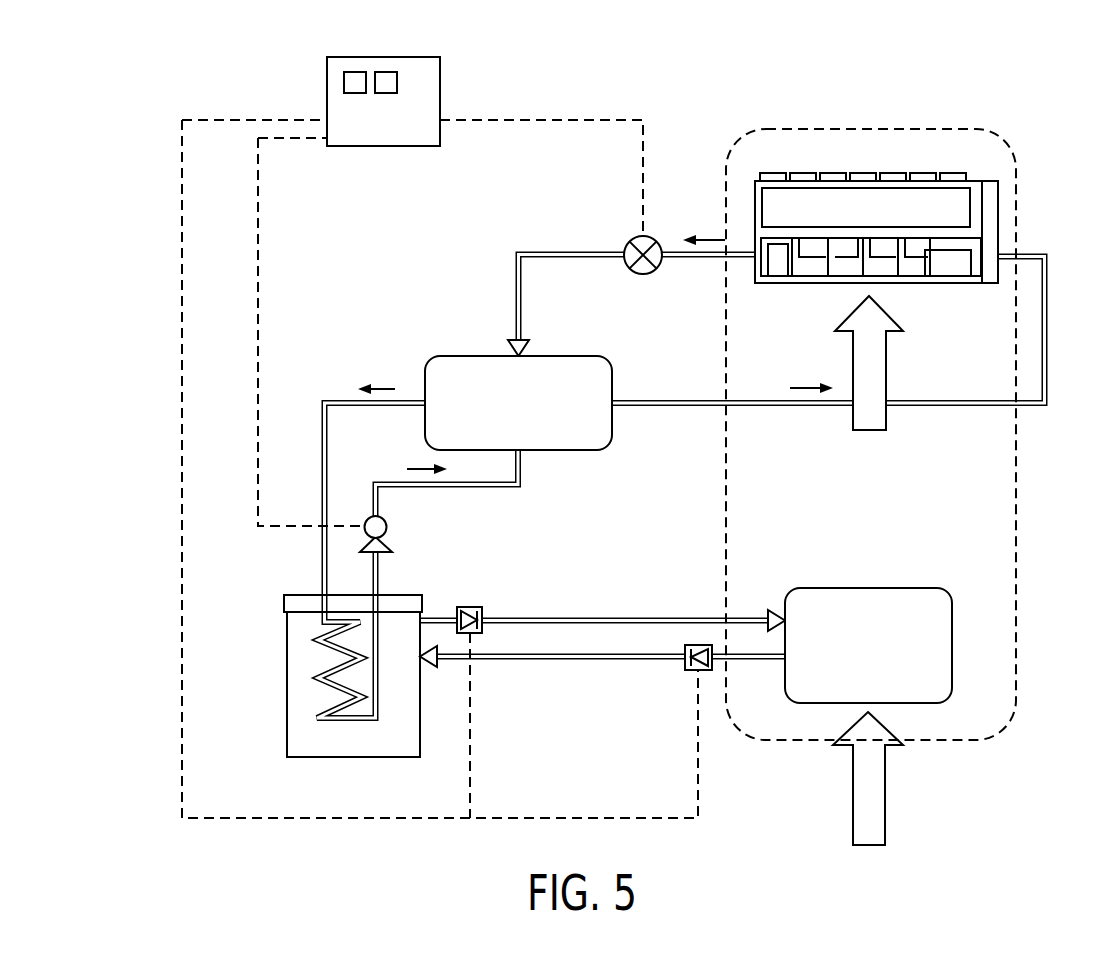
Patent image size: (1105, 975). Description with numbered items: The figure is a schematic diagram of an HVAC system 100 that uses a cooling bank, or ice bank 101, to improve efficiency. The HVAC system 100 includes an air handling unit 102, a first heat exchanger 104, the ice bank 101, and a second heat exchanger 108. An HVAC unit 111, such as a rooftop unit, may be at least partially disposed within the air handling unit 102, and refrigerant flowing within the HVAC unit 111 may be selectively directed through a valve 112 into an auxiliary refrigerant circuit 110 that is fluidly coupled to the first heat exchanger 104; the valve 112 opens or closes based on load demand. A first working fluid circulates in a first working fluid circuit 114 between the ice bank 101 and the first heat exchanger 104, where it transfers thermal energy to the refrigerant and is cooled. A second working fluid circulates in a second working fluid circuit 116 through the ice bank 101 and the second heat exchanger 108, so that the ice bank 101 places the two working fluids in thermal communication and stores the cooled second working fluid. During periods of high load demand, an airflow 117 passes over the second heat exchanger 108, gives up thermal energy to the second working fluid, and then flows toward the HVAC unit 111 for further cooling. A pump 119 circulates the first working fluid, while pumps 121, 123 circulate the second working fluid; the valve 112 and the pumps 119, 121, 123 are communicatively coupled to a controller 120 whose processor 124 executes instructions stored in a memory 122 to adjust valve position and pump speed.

The HVAC system 100 is at (130, 76).
The ice bank 101 is at (284, 604).
The air handling unit 102 is at (1005, 143).
The first heat exchanger 104 is at (478, 356).
The second heat exchanger 108 is at (952, 645).
The auxiliary refrigerant circuit 110 is at (1029, 226).
The HVAC unit 111 is at (836, 173).
The valve 112 is at (634, 240).
The first working fluid circuit 114 is at (305, 463).
The second working fluid circuit 116 is at (697, 598).
The airflow 117 is at (886, 385).
The pump 119 is at (387, 520).
The controller 120 is at (375, 273).
The pump 121 is at (470, 607).
The memory 122 is at (344, 80).
The pump 123 is at (692, 672).
The processor 124 is at (386, 72).